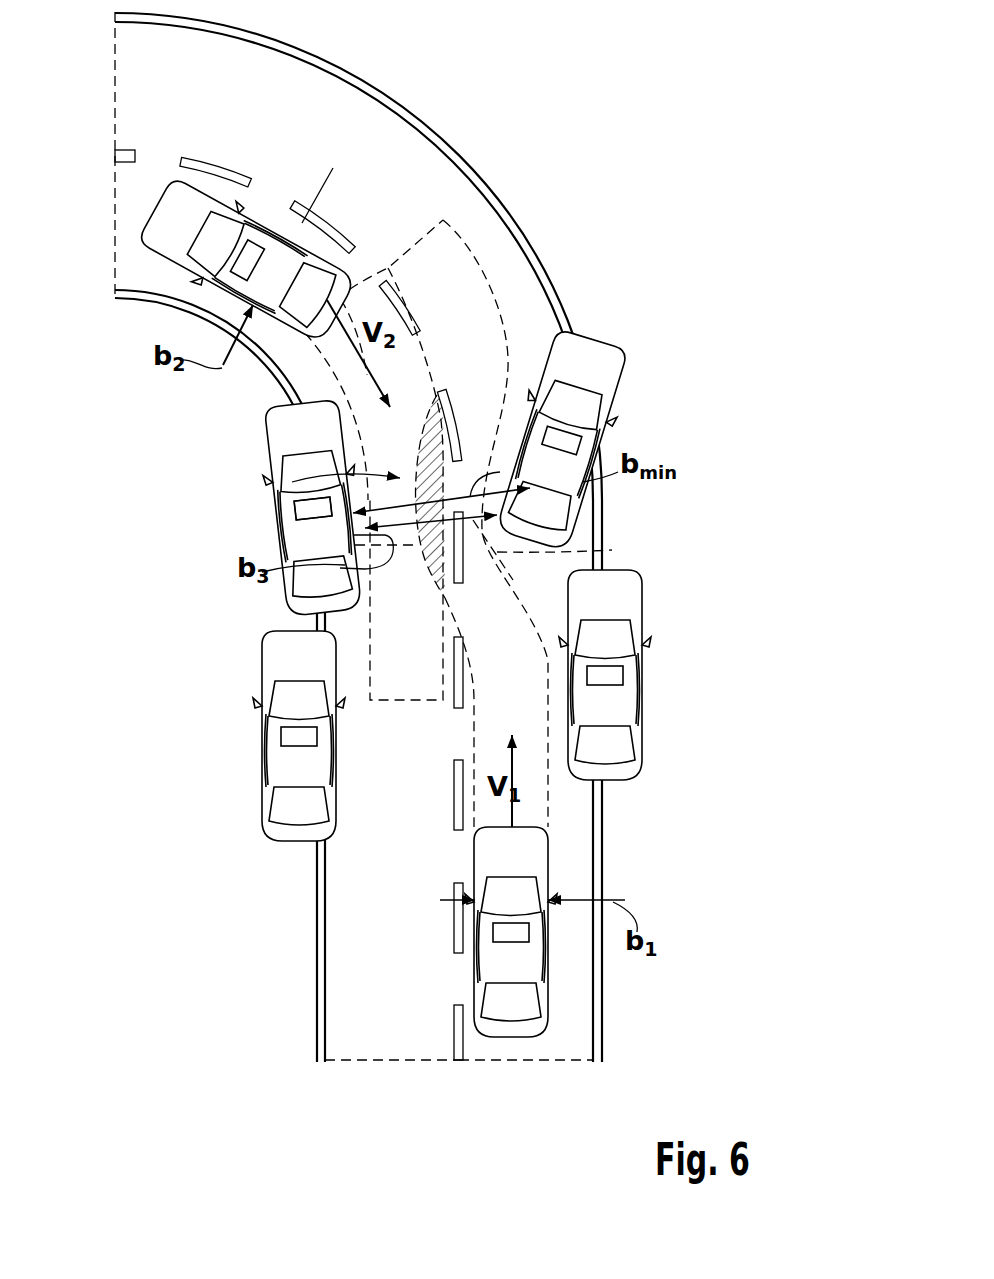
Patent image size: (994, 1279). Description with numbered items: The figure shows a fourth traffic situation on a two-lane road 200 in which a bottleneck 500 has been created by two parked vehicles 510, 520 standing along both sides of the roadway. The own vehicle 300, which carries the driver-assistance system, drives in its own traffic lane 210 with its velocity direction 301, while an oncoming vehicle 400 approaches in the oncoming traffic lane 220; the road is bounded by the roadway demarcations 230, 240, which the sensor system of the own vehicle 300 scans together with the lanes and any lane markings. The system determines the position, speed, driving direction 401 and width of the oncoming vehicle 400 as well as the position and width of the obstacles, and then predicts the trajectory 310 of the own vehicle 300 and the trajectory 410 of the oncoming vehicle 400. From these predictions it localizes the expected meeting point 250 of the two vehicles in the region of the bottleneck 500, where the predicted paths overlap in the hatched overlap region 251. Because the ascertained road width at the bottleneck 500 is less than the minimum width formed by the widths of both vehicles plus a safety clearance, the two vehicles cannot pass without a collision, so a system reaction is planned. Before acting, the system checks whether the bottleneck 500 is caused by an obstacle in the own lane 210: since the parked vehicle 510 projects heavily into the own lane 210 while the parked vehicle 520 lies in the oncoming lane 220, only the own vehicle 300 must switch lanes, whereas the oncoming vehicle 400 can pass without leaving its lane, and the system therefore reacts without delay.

The road 200 is at (470, 197).
The own traffic lane 210 is at (491, 1045).
The oncoming traffic lane 220 is at (402, 1045).
The roadway demarcation 230 is at (596, 1047).
The roadway demarcation 240 is at (325, 1047).
The expected meeting point 250 is at (612, 550).
The overlap region 251 is at (430, 443).
The own vehicle 300 is at (535, 862).
The velocity direction of ego vehicle 301 is at (515, 788).
The trajectory of own vehicle 310 is at (550, 815).
The oncoming vehicle 400 is at (160, 222).
The driving direction of oncoming vehicle 401 is at (290, 380).
The trajectory of oncoming vehicle 410 is at (275, 378).
The bottleneck 500 is at (272, 476).
The parked vehicle (obstacle) 510 is at (605, 374).
The parked vehicle (obstacle) 520 is at (292, 515).